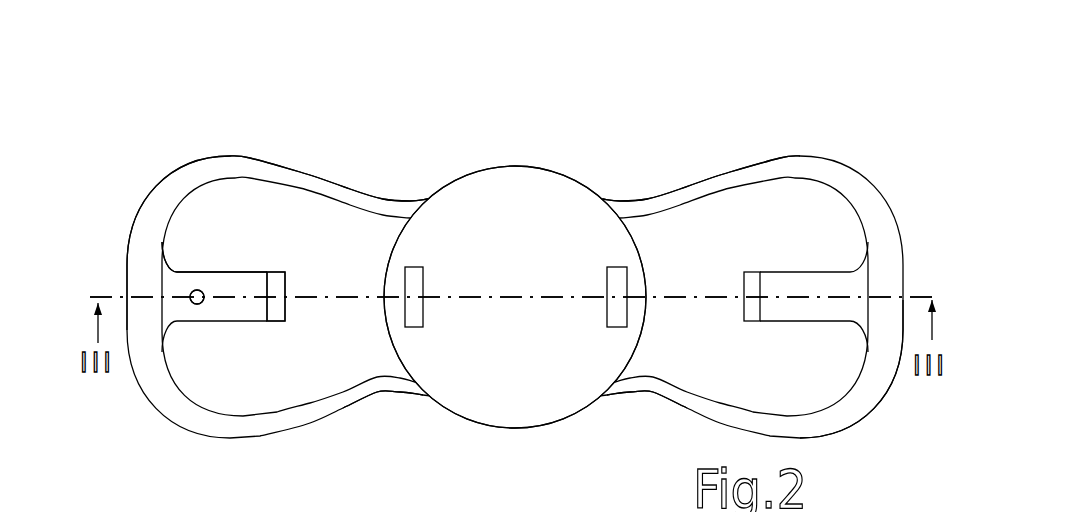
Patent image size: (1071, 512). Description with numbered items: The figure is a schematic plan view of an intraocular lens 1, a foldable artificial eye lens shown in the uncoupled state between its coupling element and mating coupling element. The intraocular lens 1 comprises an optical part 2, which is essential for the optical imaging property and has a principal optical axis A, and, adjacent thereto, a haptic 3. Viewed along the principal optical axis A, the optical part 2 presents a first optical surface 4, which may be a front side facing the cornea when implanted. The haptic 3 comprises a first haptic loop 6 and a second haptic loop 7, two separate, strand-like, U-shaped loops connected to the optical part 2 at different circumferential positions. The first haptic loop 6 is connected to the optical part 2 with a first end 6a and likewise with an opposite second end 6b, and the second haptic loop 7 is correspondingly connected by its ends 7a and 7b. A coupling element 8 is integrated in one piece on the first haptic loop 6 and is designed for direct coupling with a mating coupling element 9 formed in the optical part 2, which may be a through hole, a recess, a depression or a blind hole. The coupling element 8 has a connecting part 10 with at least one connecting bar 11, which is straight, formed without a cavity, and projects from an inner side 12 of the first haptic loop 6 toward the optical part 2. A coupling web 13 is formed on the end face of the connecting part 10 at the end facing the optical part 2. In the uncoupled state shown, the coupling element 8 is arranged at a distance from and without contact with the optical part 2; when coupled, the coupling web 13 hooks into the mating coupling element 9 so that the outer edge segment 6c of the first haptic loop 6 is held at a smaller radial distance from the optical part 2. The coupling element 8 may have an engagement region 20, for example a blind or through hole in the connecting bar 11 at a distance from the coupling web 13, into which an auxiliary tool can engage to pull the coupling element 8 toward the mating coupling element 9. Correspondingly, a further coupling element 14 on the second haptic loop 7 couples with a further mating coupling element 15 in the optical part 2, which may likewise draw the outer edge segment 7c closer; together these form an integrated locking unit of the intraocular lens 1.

The intraocular lens 1 is at (465, 153).
The optical part 2 is at (507, 203).
The haptic 3 is at (287, 153).
The first optical surface 4 is at (545, 198).
The first haptic loop 6 is at (195, 130).
The first end 6a is at (413, 190).
The second end 6b is at (410, 407).
The outer edge segment 6c is at (122, 232).
The second haptic loop 7 is at (847, 147).
The first end 7a is at (607, 188).
The second end 7b is at (623, 400).
The outer edge segment 7c is at (873, 417).
The coupling element 8 is at (235, 260).
The mating coupling element 9 is at (410, 278).
The connecting part 10 is at (245, 333).
The connecting bar 11 is at (210, 308).
The inner side 12 is at (170, 223).
The coupling web 13 is at (279, 284).
The further coupling element 14 is at (795, 258).
The further mating coupling element 15 is at (625, 278).
The engagement region 20 is at (192, 306).
The principal optical axis A is at (513, 297).